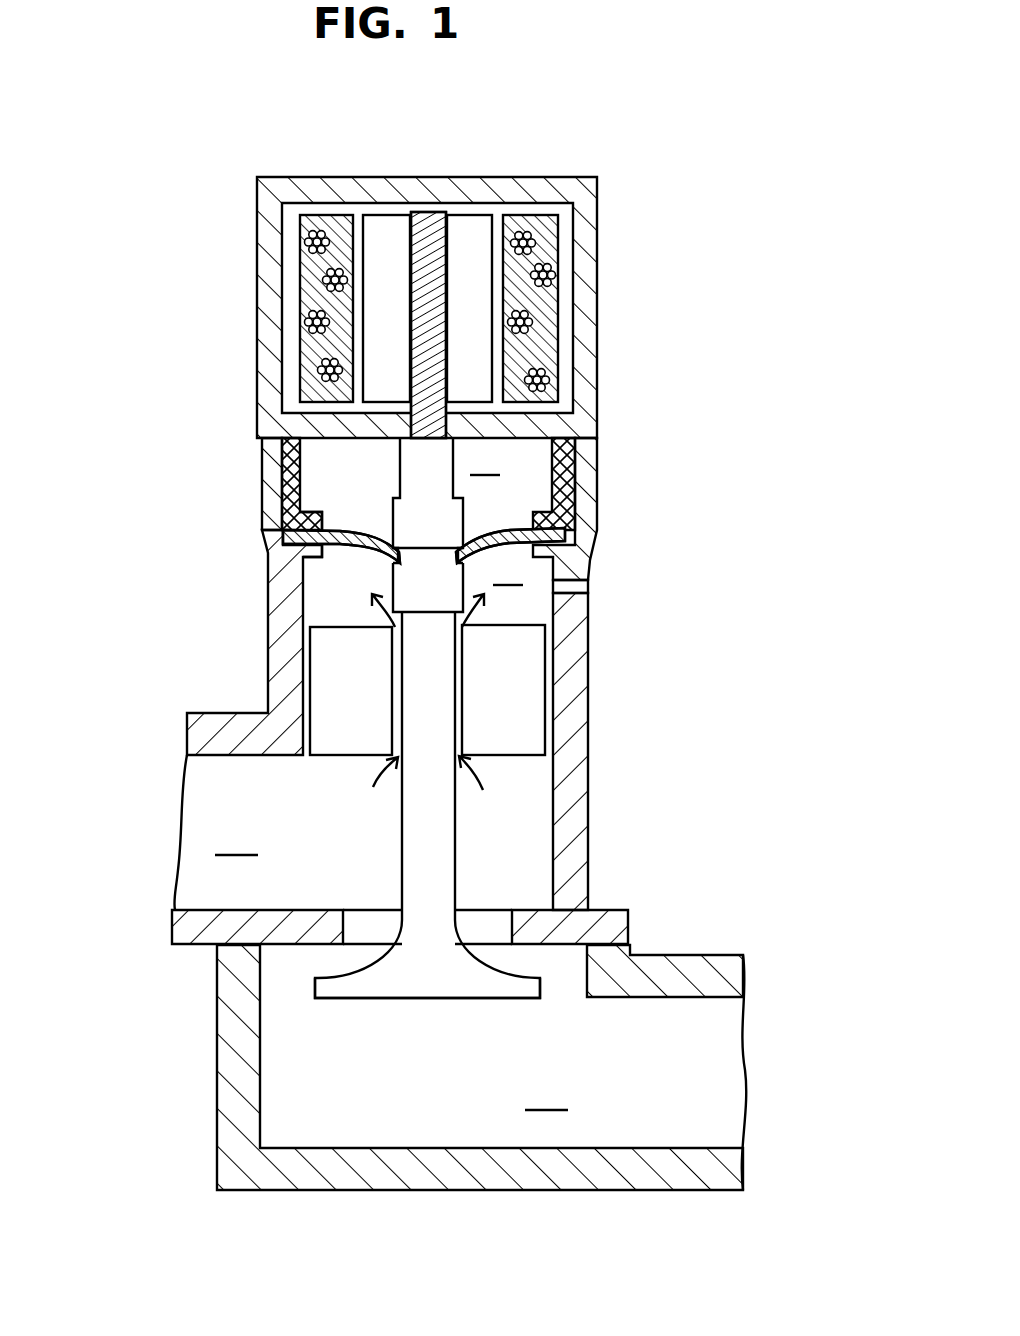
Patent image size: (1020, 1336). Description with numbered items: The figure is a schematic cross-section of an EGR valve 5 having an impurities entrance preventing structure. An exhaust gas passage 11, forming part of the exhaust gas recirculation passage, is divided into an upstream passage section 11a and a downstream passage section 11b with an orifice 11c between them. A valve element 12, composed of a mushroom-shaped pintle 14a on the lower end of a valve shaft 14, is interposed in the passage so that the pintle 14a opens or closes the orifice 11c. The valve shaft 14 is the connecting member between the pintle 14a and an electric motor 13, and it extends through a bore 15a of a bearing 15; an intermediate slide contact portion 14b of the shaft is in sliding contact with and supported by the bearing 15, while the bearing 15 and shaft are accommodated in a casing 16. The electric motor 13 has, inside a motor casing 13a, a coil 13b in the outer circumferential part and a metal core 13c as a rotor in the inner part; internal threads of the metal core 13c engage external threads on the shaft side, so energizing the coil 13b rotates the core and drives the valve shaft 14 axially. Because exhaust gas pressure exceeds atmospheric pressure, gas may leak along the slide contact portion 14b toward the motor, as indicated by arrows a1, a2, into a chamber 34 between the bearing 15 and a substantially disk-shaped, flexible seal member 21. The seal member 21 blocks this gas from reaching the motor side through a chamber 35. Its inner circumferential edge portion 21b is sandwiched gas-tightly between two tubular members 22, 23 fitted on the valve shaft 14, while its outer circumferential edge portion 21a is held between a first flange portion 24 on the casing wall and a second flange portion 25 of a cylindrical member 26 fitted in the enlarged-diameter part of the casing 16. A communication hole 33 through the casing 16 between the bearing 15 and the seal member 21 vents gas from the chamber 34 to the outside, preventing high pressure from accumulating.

The EGR valve 5 is at (176, 973).
The exhaust gas passage 11 is at (363, 1120).
The upstream passage section 11a is at (549, 1096).
The downstream passage section 11b is at (240, 841).
The orifice 11c is at (490, 918).
The valve element 12 is at (463, 837).
The electric motor 13 is at (604, 232).
The motor casing 13a is at (552, 178).
The coil 13b is at (557, 312).
The metal core 13c is at (470, 237).
The valve shaft 14 is at (457, 860).
The pintle 14a is at (424, 990).
The slide contact portion 14b is at (465, 688).
The bearing 15 is at (322, 698).
The bore 15a is at (413, 705).
The casing 16 is at (590, 636).
The seal member 21 is at (565, 498).
The outer circumferential edge portion 21a is at (560, 540).
The inner circumferential edge portion 21b is at (385, 572).
The tubular member 22 is at (400, 660).
The tubular member 23 is at (393, 500).
The first flange portion 24 is at (395, 558).
The second flange portion 25 is at (328, 517).
The cylindrical member 26 is at (290, 478).
The communication hole 33 is at (575, 588).
The chamber 34 is at (509, 571).
The chamber 35 is at (486, 461).
The arrow a1 is at (427, 785).
The arrow a2 is at (430, 610).